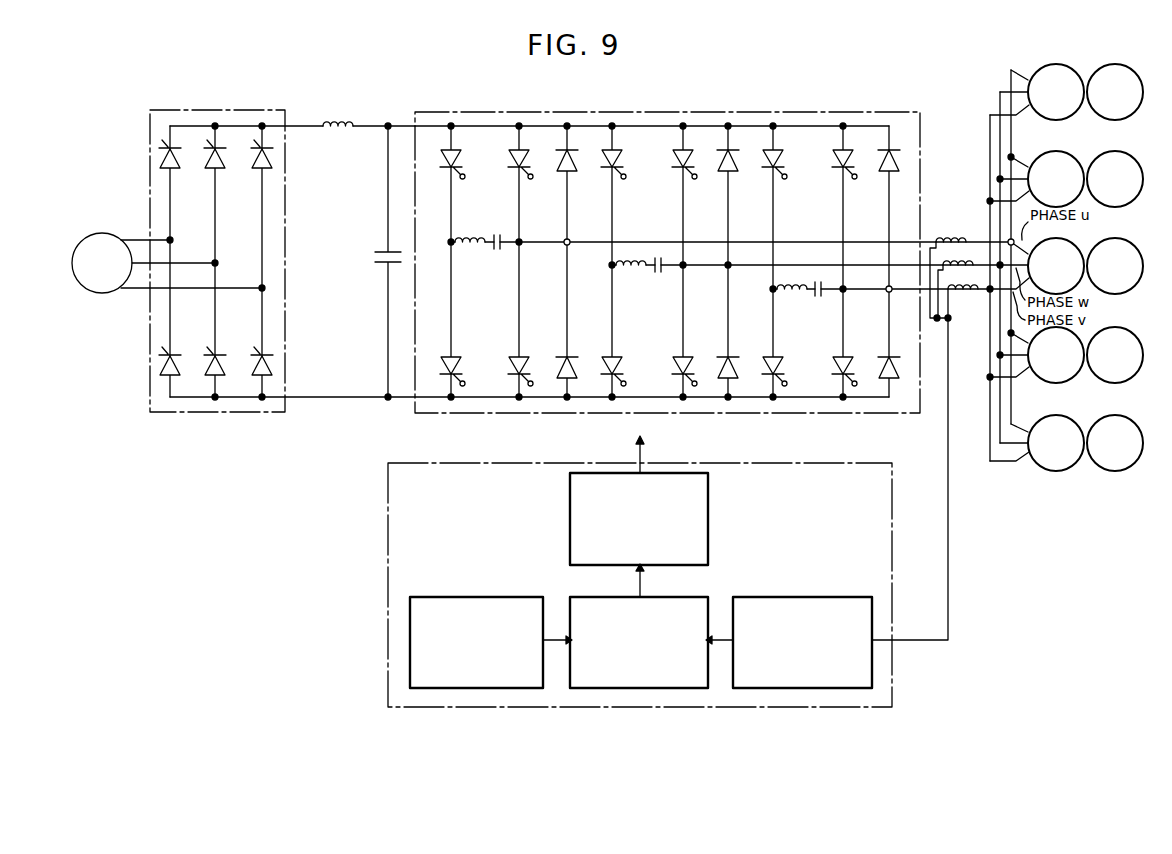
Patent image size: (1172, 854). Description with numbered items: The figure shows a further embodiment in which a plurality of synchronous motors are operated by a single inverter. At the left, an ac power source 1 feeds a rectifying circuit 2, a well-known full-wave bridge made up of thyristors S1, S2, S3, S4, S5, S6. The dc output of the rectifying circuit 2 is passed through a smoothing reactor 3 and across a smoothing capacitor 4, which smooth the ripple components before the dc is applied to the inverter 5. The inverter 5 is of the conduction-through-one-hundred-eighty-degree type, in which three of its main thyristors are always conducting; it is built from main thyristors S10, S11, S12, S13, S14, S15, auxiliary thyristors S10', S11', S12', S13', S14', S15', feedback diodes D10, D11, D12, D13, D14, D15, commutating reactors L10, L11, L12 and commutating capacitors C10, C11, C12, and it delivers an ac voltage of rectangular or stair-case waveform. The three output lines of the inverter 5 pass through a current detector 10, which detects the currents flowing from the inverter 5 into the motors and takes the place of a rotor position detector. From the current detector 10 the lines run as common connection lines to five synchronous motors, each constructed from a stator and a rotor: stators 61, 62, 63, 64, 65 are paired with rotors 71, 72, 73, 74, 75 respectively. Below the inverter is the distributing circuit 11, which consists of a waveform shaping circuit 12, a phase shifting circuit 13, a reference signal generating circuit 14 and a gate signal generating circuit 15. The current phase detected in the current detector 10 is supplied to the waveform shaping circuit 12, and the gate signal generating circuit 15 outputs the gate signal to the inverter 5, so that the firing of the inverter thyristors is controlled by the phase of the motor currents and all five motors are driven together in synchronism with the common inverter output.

The ac power source 1 is at (111, 233).
The rectifying circuit 2 is at (269, 242).
The smoothing reactor 3 is at (338, 120).
The smoothing capacitor 4 is at (372, 258).
The inverter 5 is at (699, 242).
The current detector 10 is at (953, 240).
The distributing circuit 11 is at (386, 519).
The waveform shaping circuit 12 is at (793, 597).
The phase shifting circuit 13 is at (700, 597).
The reference signal generating circuit 14 is at (489, 597).
The gate signal generating circuit 15 is at (708, 515).
The stator 61 is at (1046, 66).
The stator 62 is at (1049, 152).
The stator 63 is at (1052, 234).
The stator 64 is at (1070, 383).
The stator 65 is at (1068, 471).
The rotor 71 is at (1104, 66).
The rotor 72 is at (1106, 152).
The rotor 73 is at (1106, 234).
The rotor 74 is at (1116, 383).
The rotor 75 is at (1116, 471).
The thyristor S1 is at (176, 165).
The thyristor S2 is at (221, 165).
The thyristor S3 is at (269, 165).
The thyristor S4 is at (178, 360).
The thyristor S5 is at (224, 360).
The thyristor S6 is at (270, 364).
The main thyristor S10 is at (512, 176).
The auxiliary thyristor S10' is at (463, 189).
The main thyristor S11 is at (671, 178).
The auxiliary thyristor S11' is at (603, 178).
The main thyristor S12 is at (830, 178).
The auxiliary thyristor S12' is at (763, 178).
The main thyristor S13 is at (505, 354).
The auxiliary thyristor S13' is at (442, 353).
The main thyristor S14 is at (668, 354).
The auxiliary thyristor S14' is at (603, 353).
The main thyristor S15 is at (830, 356).
The auxiliary thyristor S15' is at (761, 355).
The feedback diode D10 is at (564, 173).
The feedback diode D11 is at (724, 173).
The feedback diode D12 is at (884, 173).
The feedback diode D13 is at (562, 370).
The feedback diode D14 is at (722, 371).
The feedback diode D15 is at (884, 373).
The commutating reactor L10 is at (470, 250).
The commutating reactor L11 is at (618, 270).
The commutating reactor L12 is at (782, 289).
The commutating capacitor C10 is at (499, 250).
The commutating capacitor C11 is at (657, 272).
The commutating capacitor C12 is at (818, 294).